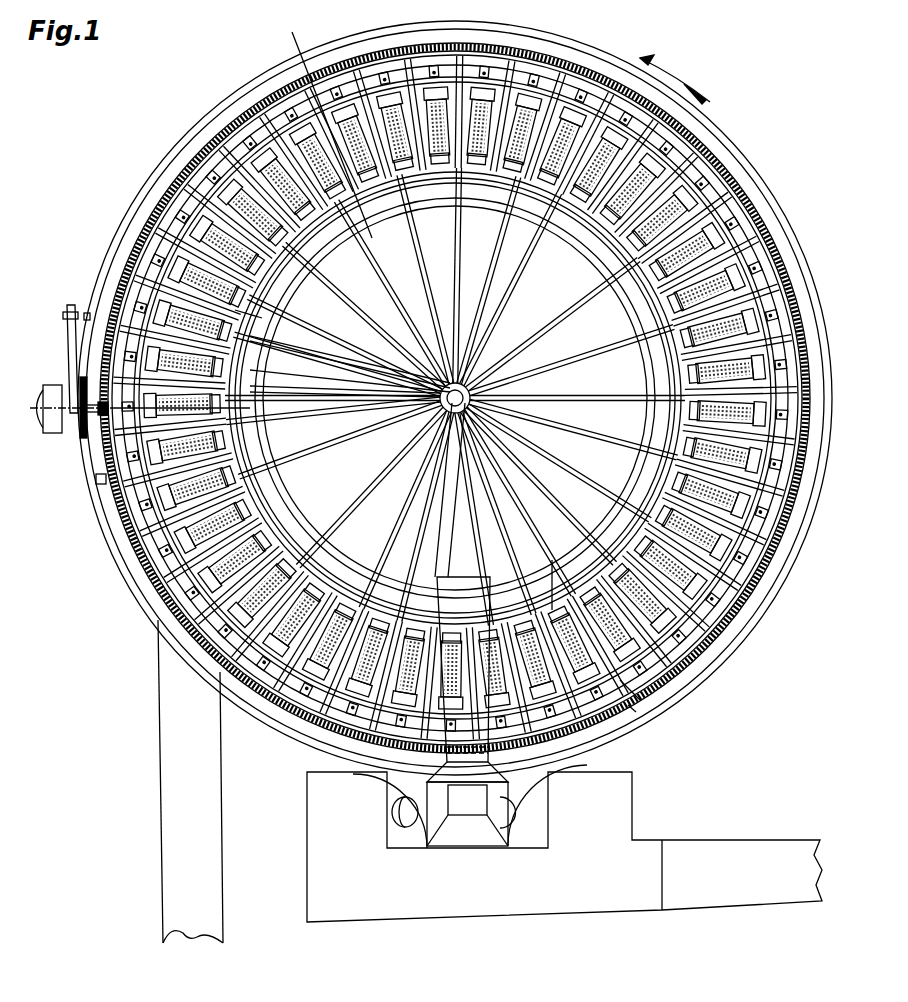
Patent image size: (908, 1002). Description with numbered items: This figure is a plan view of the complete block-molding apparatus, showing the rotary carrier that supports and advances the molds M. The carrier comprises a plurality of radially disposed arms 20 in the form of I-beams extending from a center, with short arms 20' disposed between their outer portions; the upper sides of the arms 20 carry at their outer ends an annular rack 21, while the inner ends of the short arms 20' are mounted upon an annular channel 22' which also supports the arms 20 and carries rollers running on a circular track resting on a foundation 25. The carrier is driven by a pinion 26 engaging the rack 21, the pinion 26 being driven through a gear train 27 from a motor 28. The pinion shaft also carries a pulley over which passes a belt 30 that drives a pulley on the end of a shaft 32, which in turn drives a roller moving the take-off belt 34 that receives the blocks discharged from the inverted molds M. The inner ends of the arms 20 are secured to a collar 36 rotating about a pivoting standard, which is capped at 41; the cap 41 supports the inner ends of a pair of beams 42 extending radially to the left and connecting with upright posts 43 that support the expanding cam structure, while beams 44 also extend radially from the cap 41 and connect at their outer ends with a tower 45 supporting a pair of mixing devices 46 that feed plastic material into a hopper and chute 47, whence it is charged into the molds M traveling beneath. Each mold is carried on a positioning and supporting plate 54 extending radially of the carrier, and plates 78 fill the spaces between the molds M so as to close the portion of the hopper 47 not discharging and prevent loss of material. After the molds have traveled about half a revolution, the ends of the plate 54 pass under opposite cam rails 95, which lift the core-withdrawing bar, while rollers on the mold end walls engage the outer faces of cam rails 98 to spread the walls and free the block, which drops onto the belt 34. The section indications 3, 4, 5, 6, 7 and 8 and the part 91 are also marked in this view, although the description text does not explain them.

The spoke 3 is at (503, 316).
The section line 4- 4 is at (292, 36).
The section line 5- 5 is at (30, 416).
The mold unit 6 is at (332, 152).
The mold carrier ring 7 is at (160, 310).
The ring / section 8- 8 is at (165, 556).
The radially disposed arms 20 is at (452, 397).
The short arms 20' is at (455, 398).
The annular rack 21 is at (705, 188).
The annular channel 22' is at (455, 398).
The foundation 25 is at (150, 600).
The pinion 26 is at (96, 425).
The gear train 27 is at (80, 420).
The motor 28 is at (50, 386).
The belt 30 is at (68, 332).
The shaft 32 is at (86, 306).
The take-off belt 34 is at (156, 767).
The collar 36 is at (438, 401).
The cap 41 is at (472, 404).
The beams 42 is at (311, 356).
The upright posts 43 is at (100, 480).
The beams 44 is at (445, 548).
The tower 45 is at (564, 843).
The mixing devices 46 is at (394, 797).
The hopper and chute 47 is at (467, 711).
The positioning and supporting plate 54 is at (552, 608).
The plates 78 is at (634, 706).
The slide 91 is at (262, 316).
The cam rails 95 is at (250, 350).
The cam rails 98 is at (248, 377).
The molds M is at (740, 212).